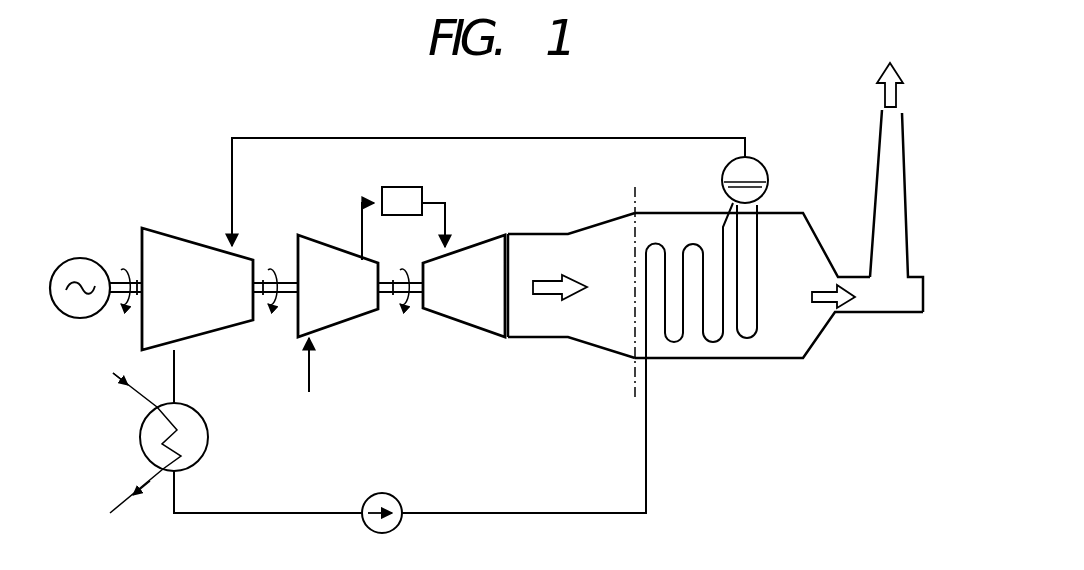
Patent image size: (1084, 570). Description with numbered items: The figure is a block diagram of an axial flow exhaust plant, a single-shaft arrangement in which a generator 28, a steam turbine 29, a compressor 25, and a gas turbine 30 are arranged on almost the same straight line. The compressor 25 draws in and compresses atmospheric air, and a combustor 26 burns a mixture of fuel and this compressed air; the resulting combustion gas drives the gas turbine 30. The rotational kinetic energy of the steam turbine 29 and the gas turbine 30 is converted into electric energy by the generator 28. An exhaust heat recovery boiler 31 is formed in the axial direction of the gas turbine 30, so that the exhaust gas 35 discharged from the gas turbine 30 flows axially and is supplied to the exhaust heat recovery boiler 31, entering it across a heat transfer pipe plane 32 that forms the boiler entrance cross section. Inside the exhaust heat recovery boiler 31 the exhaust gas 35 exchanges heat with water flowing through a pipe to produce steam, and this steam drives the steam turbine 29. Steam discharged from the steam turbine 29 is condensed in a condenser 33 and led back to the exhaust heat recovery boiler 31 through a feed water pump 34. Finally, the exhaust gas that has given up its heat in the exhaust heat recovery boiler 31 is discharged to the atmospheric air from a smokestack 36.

The compressor 25 is at (318, 235).
The combustor 26 is at (383, 190).
The generator 28 is at (78, 258).
The steam turbine 29 is at (187, 239).
The gas turbine 30 is at (482, 237).
The exhaust heat recovery boiler 31 is at (691, 225).
The heat transfer pipe plane 32 is at (635, 198).
The condenser 33 is at (140, 445).
The feed water pump 34 is at (366, 500).
The exhaust gas 35 is at (545, 278).
The smokestack 36 is at (893, 240).